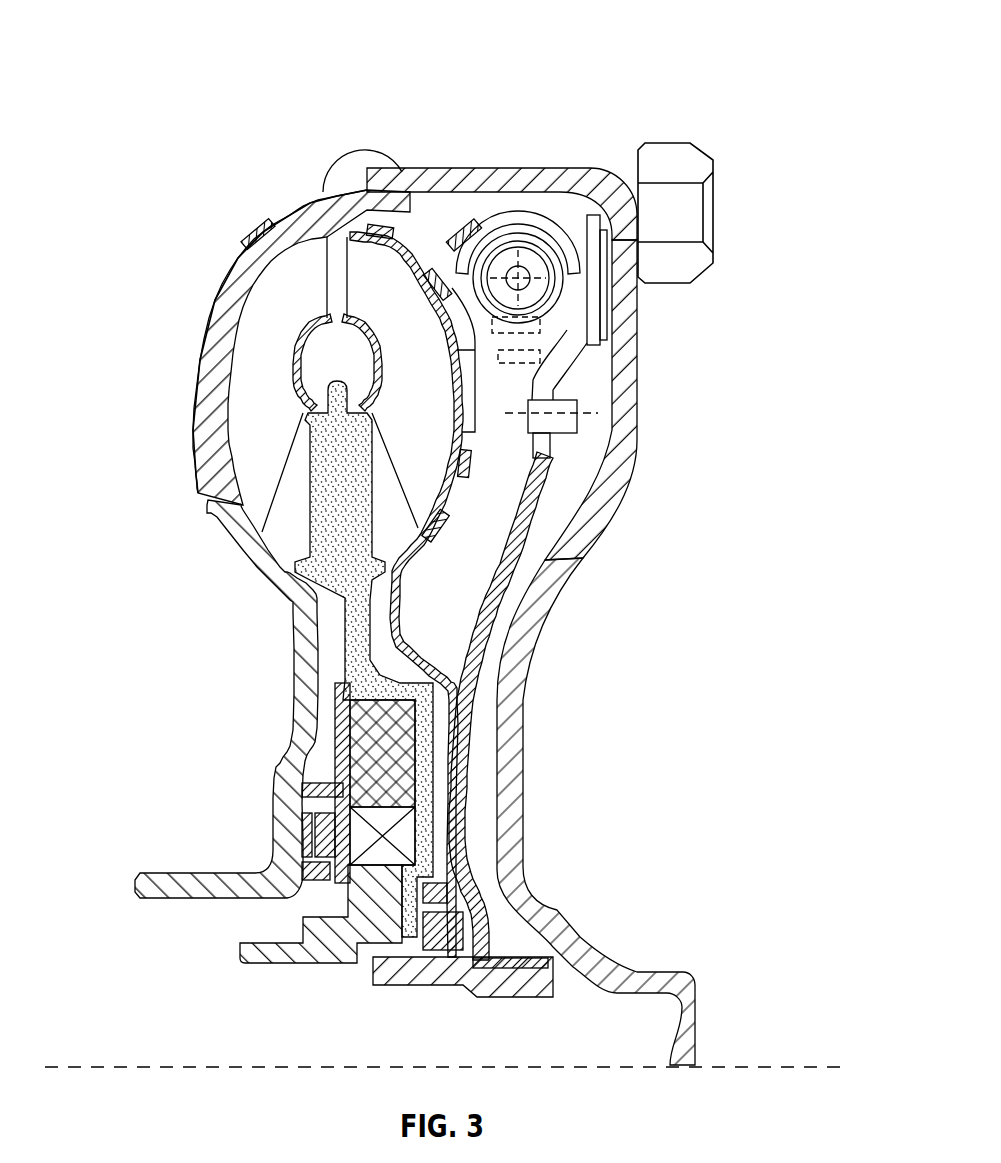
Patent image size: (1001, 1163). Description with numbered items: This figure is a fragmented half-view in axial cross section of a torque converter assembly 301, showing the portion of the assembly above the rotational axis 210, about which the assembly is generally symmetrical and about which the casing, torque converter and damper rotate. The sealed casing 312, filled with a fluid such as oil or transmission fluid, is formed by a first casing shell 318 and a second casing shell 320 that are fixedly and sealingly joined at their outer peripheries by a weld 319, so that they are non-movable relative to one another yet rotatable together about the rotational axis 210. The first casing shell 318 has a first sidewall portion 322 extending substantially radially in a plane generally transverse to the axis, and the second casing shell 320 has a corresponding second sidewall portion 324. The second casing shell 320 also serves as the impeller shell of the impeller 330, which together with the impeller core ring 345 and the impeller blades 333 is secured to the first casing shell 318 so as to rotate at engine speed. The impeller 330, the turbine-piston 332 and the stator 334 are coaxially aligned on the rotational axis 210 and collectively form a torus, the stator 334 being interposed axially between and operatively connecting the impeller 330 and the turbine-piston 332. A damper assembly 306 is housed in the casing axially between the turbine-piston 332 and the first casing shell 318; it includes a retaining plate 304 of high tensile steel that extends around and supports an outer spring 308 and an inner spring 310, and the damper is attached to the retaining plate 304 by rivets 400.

The torque converter assembly 301 is at (778, 28).
The sealed casing 312 is at (593, 135).
The first sidewall portion 322 is at (636, 412).
The first casing shell 318 is at (520, 700).
The weld 319 is at (353, 167).
The outer spring 308 is at (550, 250).
The retaining plate 304 is at (478, 234).
The inner spring 310 is at (555, 300).
The rivet 400 is at (577, 435).
The damper assembly 306 is at (503, 566).
The turbine-piston 332 is at (412, 560).
The second sidewall portion 324 is at (213, 405).
The impeller 330 is at (196, 474).
The second casing shell 320 is at (297, 645).
The impeller core ring 345 is at (297, 352).
The impeller blades 333 is at (280, 451).
The stator 334 is at (370, 491).
The rotational axis 210 is at (123, 1066).